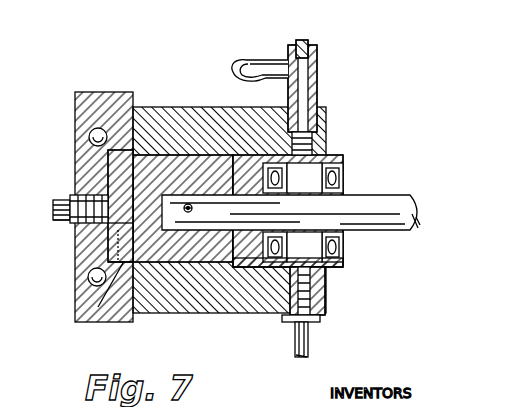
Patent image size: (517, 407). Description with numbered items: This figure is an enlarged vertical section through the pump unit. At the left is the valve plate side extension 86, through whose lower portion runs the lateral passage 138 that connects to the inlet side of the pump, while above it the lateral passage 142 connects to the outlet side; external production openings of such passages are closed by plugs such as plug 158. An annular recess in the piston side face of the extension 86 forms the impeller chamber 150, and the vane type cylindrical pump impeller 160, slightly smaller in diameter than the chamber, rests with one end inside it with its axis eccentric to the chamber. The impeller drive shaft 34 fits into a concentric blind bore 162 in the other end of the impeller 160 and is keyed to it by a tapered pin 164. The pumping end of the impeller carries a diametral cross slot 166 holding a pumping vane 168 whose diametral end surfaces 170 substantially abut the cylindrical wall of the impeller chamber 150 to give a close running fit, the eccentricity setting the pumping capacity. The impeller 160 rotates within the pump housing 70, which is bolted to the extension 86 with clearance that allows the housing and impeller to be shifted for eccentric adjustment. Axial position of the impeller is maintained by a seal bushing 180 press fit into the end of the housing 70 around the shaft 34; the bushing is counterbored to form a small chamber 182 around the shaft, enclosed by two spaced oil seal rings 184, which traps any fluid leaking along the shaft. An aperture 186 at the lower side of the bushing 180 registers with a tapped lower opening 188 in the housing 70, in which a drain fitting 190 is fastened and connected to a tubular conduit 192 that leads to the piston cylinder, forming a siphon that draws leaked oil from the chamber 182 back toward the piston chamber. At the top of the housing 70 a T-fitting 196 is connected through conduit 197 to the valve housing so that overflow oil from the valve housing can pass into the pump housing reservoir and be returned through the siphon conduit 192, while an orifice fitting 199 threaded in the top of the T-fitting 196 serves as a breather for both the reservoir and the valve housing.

The impeller drive shaft 34 is at (380, 198).
The pump housing 70 is at (238, 110).
The valve plate side extension 86 is at (80, 111).
The lateral passage 138 is at (91, 279).
The lateral passage 142 is at (92, 139).
The impeller chamber 150 is at (76, 196).
The plug 158 is at (67, 222).
The pump impeller 160 is at (152, 158).
The blind bore 162 is at (189, 203).
The tapered pin 164 is at (188, 213).
The diametral cross slot 166 is at (128, 243).
The pumping vane 168 is at (88, 258).
The diametral end surfaces 170 is at (114, 150).
The seal bushing 180 is at (338, 158).
The chamber 182 is at (304, 247).
The oil seal rings 184 is at (304, 178).
The aperture 186 is at (344, 262).
The tapped lower opening 188 is at (326, 290).
The drain fitting 190 is at (317, 320).
The tubular conduit 192 is at (298, 340).
The T-fitting 196 is at (318, 76).
The conduit 197 is at (255, 58).
The orifice fitting 199 is at (312, 42).